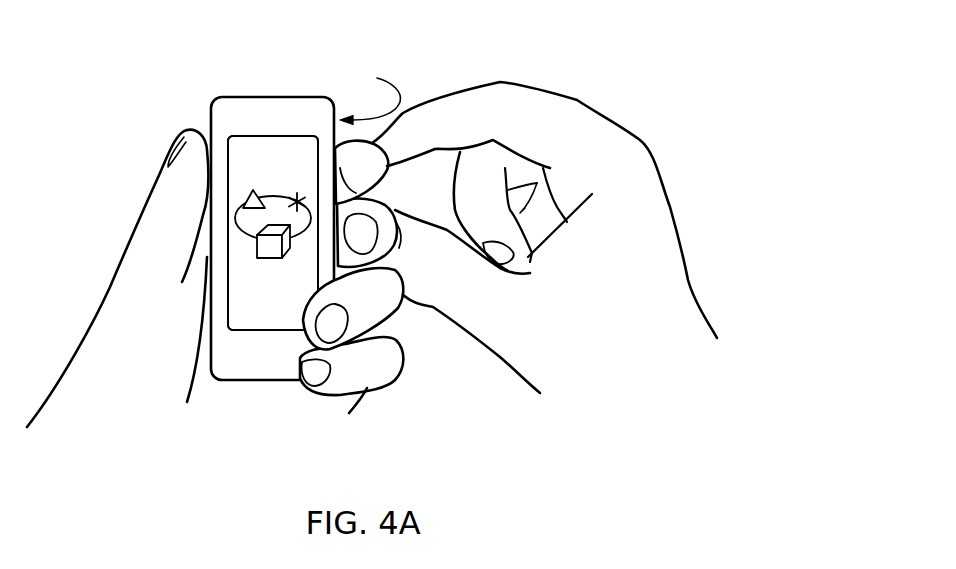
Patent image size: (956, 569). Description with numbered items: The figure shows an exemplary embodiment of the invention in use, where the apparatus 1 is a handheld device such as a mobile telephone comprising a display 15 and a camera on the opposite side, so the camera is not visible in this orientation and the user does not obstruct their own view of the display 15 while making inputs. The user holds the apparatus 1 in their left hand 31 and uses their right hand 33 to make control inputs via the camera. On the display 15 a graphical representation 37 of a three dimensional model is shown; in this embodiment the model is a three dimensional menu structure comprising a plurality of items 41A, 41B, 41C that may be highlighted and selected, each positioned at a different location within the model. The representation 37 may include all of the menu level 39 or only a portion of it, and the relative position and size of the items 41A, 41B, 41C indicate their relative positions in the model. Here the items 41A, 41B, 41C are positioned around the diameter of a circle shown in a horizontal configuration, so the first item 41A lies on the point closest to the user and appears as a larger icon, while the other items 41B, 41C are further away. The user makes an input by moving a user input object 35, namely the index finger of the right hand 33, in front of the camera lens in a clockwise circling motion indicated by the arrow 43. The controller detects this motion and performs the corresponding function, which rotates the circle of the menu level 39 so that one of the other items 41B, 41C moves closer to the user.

The apparatus 1 is at (336, 106).
The display 15 is at (238, 142).
The graphical representation 37 is at (243, 162).
The menu level 39 is at (275, 195).
The first item 41A is at (268, 248).
The item 41B is at (247, 203).
The item 41C is at (296, 196).
The arrow 43 is at (395, 73).
The left hand 31 is at (155, 395).
The right hand 33 is at (577, 352).
The user input object 35 is at (537, 110).